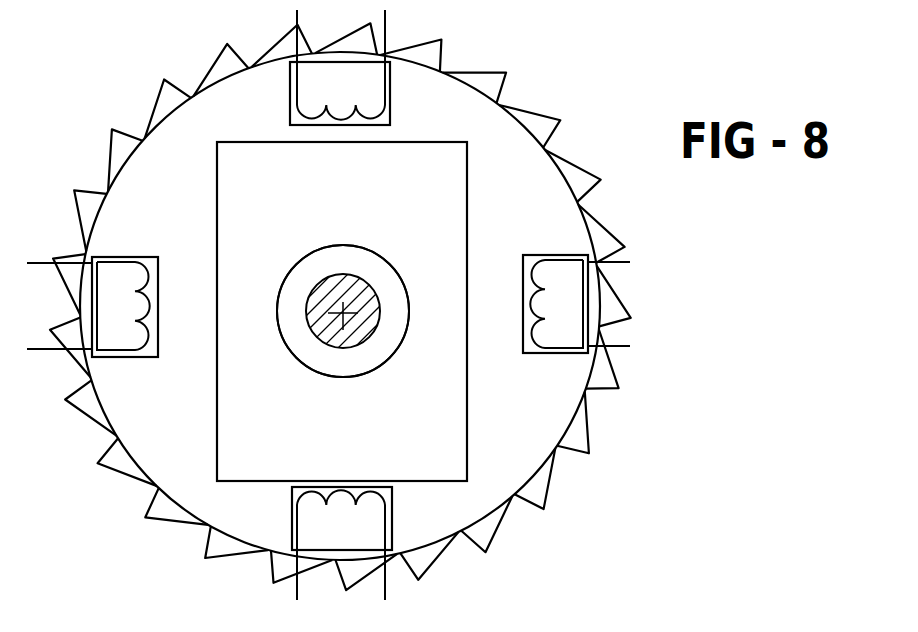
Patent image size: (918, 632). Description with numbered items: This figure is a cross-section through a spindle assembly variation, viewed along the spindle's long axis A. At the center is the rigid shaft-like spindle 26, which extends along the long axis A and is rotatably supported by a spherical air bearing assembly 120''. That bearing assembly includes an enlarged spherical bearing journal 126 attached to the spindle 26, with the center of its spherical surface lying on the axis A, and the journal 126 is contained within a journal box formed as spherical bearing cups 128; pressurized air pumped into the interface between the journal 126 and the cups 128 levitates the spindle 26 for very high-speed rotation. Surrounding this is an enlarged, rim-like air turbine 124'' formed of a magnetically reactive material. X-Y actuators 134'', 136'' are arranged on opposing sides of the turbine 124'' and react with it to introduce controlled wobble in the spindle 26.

The spherical bearing assembly 120'' is at (317, 306).
The air turbine 124'' is at (378, 306).
The bearing journal 126 is at (358, 263).
The spherical bearing cups 128 is at (319, 371).
The spindle 26 is at (321, 268).
The long axis A is at (345, 318).
The actuator 134'' is at (338, 305).
The actuator 136'' is at (328, 300).